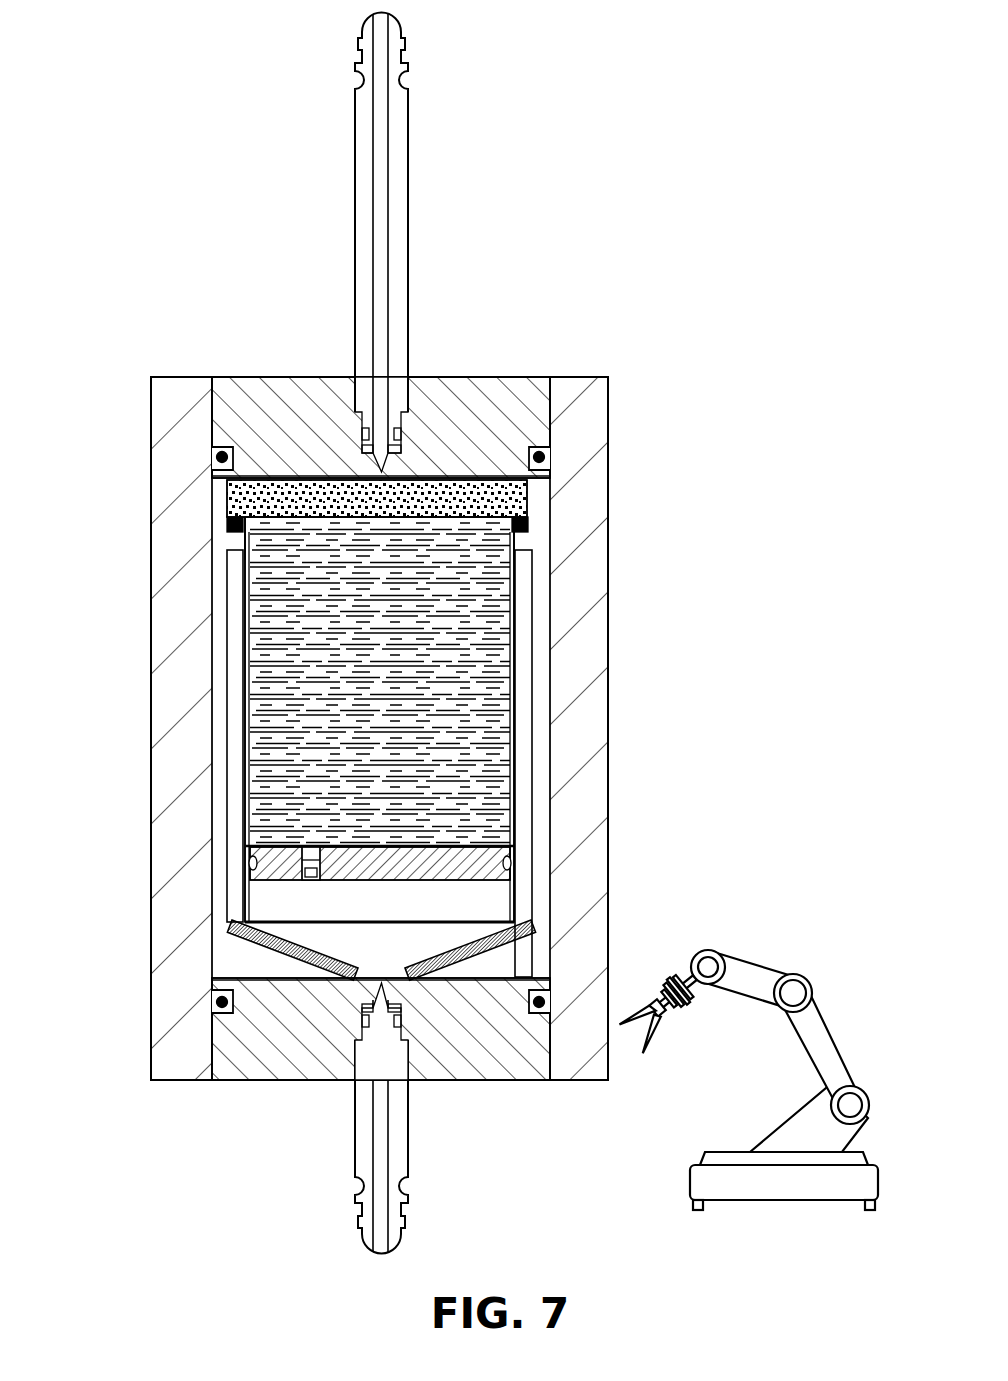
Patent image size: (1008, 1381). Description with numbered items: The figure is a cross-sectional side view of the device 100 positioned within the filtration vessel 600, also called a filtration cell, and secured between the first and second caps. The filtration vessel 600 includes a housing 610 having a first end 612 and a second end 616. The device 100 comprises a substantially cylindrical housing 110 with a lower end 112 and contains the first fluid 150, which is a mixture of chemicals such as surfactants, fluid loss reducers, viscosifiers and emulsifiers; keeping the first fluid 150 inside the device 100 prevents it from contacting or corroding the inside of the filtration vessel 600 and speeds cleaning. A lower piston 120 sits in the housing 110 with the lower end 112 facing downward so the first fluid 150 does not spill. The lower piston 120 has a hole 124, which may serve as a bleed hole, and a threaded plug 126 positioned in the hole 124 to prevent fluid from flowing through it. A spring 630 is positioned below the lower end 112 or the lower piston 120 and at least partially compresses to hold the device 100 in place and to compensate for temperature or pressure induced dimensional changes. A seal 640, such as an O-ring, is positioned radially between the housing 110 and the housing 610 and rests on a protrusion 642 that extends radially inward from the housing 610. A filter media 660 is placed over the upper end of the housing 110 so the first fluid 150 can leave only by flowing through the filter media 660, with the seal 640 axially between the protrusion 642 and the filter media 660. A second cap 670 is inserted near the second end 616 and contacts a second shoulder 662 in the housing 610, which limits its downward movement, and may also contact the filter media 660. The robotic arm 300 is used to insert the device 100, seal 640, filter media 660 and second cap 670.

The filtration vessel 600 is at (163, 345).
The housing 610 is at (150, 700).
The first end 612 is at (150, 1075).
The second end 616 is at (150, 393).
The spring 630 is at (315, 960).
The seal 640 is at (228, 520).
The protrusion 642 is at (236, 540).
The filter media 660 is at (230, 495).
The second shoulder 662 is at (542, 458).
The second cap 670 is at (278, 378).
The device 100 is at (548, 543).
The housing 110 is at (524, 718).
The lower end 112 is at (490, 925).
The lower piston 120 is at (490, 882).
The hole 124 is at (313, 853).
The plug 126 is at (313, 853).
The first fluid 150 is at (480, 625).
The robotic arm 300 is at (763, 938).